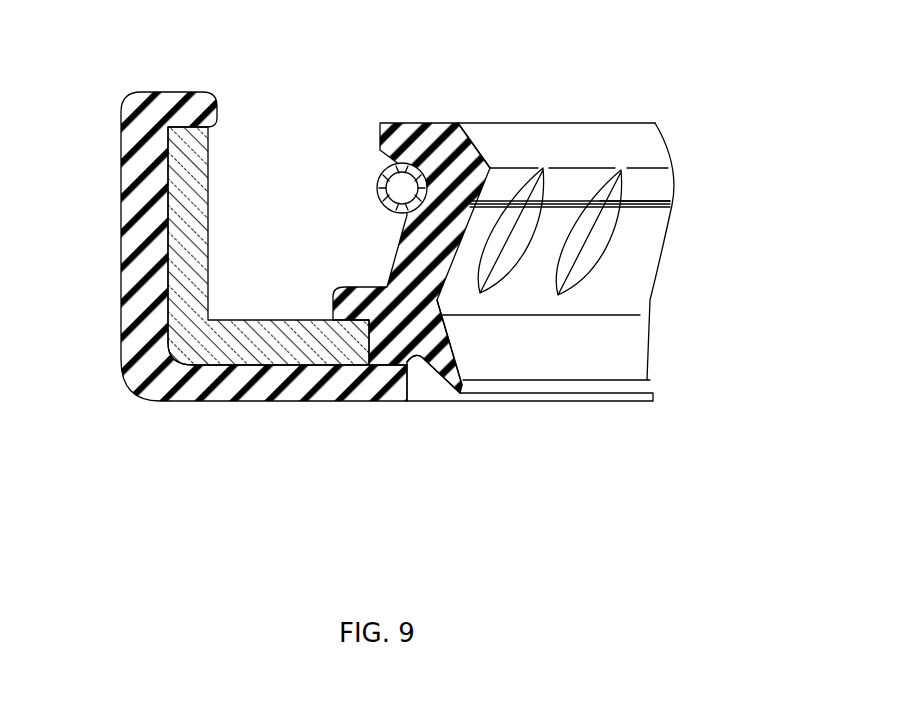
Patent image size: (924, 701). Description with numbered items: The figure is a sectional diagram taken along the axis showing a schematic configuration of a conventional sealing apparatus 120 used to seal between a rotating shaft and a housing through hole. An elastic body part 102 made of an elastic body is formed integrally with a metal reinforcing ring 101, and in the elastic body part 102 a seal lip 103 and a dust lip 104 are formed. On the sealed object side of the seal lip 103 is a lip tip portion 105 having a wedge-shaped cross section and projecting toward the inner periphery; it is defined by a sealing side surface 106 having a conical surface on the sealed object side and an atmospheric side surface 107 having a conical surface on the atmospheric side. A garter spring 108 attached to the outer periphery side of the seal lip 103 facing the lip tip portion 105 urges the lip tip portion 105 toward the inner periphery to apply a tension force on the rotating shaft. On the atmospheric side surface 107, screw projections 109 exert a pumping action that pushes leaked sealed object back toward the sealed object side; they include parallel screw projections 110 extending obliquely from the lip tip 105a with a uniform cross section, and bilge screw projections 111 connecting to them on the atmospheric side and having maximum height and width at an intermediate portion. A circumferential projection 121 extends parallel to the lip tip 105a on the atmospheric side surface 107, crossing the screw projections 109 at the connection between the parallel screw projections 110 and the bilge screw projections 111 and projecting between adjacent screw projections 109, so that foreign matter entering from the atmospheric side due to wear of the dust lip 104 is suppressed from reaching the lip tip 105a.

The reinforcing ring 101 is at (220, 347).
The elastic body part 102 is at (283, 410).
The seal lip 103 is at (458, 295).
The dust lip 104 is at (448, 381).
The lip tip portion 105 is at (481, 133).
The lip tip 105a is at (492, 167).
The sealing side surface 106 is at (643, 138).
The atmospheric side surface 107 is at (622, 292).
The garter spring 108 is at (378, 192).
The screw projections 109 is at (758, 266).
The parallel screw projections 110 is at (653, 210).
The bilge screw projections 111 is at (598, 256).
The sealing apparatus 120 is at (400, 577).
The circumferential projection 121 is at (627, 192).